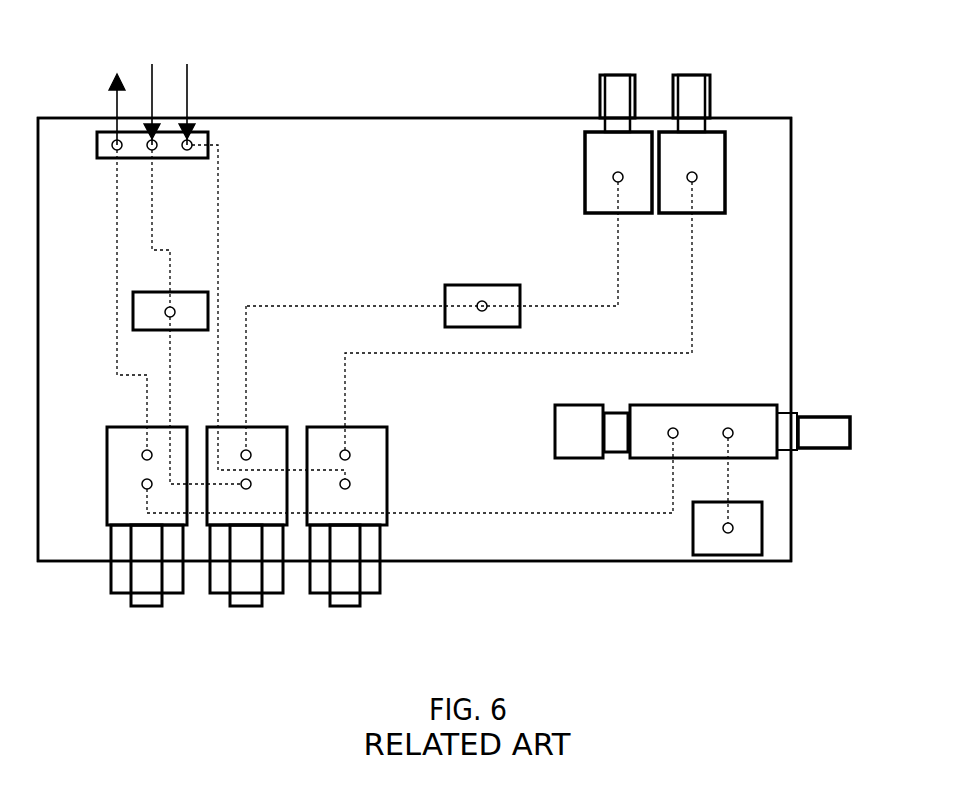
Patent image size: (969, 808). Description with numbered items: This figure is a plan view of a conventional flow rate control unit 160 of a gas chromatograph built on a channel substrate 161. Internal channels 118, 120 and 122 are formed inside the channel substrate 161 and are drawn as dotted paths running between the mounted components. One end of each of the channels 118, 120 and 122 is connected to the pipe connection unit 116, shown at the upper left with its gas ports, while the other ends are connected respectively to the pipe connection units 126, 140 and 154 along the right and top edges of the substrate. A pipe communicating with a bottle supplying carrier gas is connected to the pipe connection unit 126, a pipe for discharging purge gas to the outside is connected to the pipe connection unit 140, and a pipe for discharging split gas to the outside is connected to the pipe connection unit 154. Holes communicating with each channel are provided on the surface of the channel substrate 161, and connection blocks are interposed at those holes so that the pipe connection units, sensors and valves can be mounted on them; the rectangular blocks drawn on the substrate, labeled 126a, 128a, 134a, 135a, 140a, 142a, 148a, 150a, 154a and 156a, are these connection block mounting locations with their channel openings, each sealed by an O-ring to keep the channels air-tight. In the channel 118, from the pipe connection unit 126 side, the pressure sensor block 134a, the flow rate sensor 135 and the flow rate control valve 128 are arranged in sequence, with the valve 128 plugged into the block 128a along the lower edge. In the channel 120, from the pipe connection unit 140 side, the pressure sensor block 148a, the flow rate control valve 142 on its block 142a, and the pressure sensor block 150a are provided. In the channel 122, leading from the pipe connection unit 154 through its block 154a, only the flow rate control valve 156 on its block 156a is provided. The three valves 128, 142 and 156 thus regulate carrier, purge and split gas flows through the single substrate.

The pipe connection unit 116 is at (208, 133).
The channel 118 is at (488, 511).
The channel 120 is at (621, 273).
The channel 122 is at (697, 274).
The pipe connection unit 126 is at (829, 425).
The connector socket 126a is at (706, 405).
The flow rate control valve 128 is at (148, 582).
The connector socket 128a is at (117, 432).
The connector socket 134a is at (710, 545).
The flow rate sensor 135 is at (615, 412).
The connector socket 135a is at (553, 438).
The pipe connection unit 140 is at (616, 82).
The connector socket 140a is at (593, 158).
The flow rate control valve 142 is at (247, 582).
The connector socket 142a is at (267, 433).
The connector socket 148a is at (478, 284).
The connector socket 150a is at (193, 290).
The pipe connection unit 154 is at (694, 82).
The connector socket 154a is at (712, 163).
The flow rate control valve 156 is at (345, 582).
The connector socket 156a is at (374, 433).
The flow rate control unit 160 is at (808, 74).
The channel substrate 161 is at (792, 289).